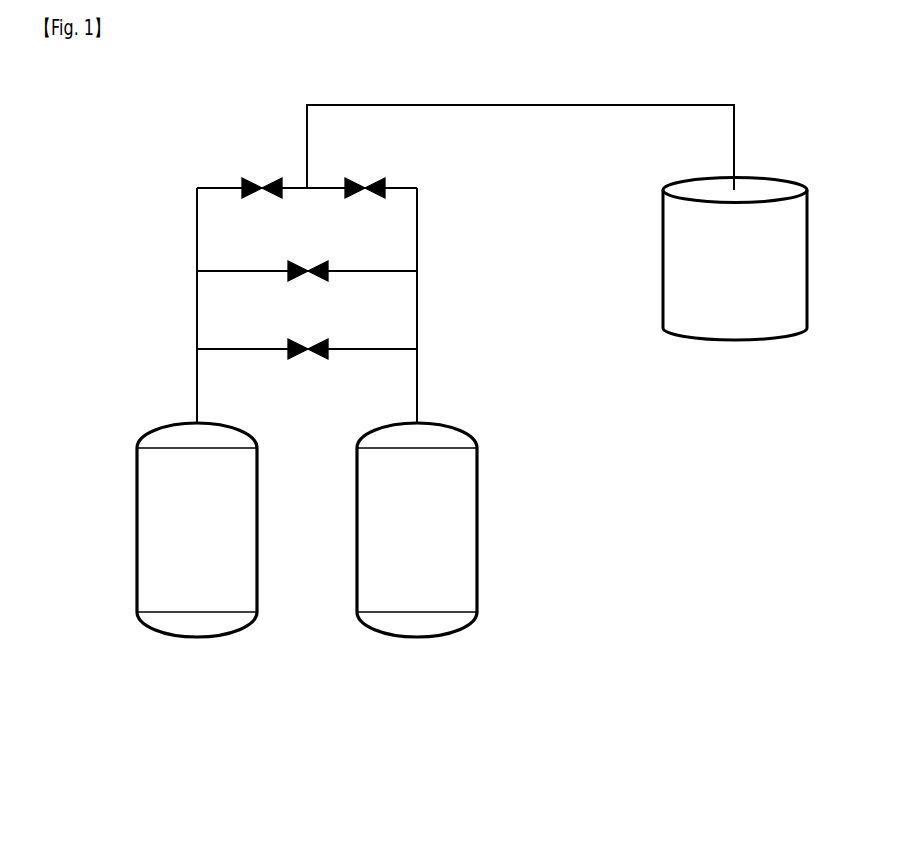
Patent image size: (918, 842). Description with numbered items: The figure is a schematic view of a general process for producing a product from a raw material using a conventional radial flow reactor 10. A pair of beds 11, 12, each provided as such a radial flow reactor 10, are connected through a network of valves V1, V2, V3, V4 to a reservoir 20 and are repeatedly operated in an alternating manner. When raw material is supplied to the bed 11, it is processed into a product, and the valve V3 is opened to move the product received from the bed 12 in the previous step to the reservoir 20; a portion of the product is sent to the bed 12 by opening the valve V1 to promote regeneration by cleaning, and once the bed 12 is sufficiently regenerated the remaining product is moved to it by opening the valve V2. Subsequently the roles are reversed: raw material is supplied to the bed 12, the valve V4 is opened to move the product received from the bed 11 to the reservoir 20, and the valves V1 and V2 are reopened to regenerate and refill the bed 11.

The radial flow reactor 10 is at (307, 619).
The bed 11 is at (201, 627).
The bed 12 is at (417, 589).
The reservoir 20 is at (765, 315).
The valve V1 is at (328, 364).
The valve V2 is at (328, 285).
The valve V3 is at (248, 203).
The valve V4 is at (351, 203).